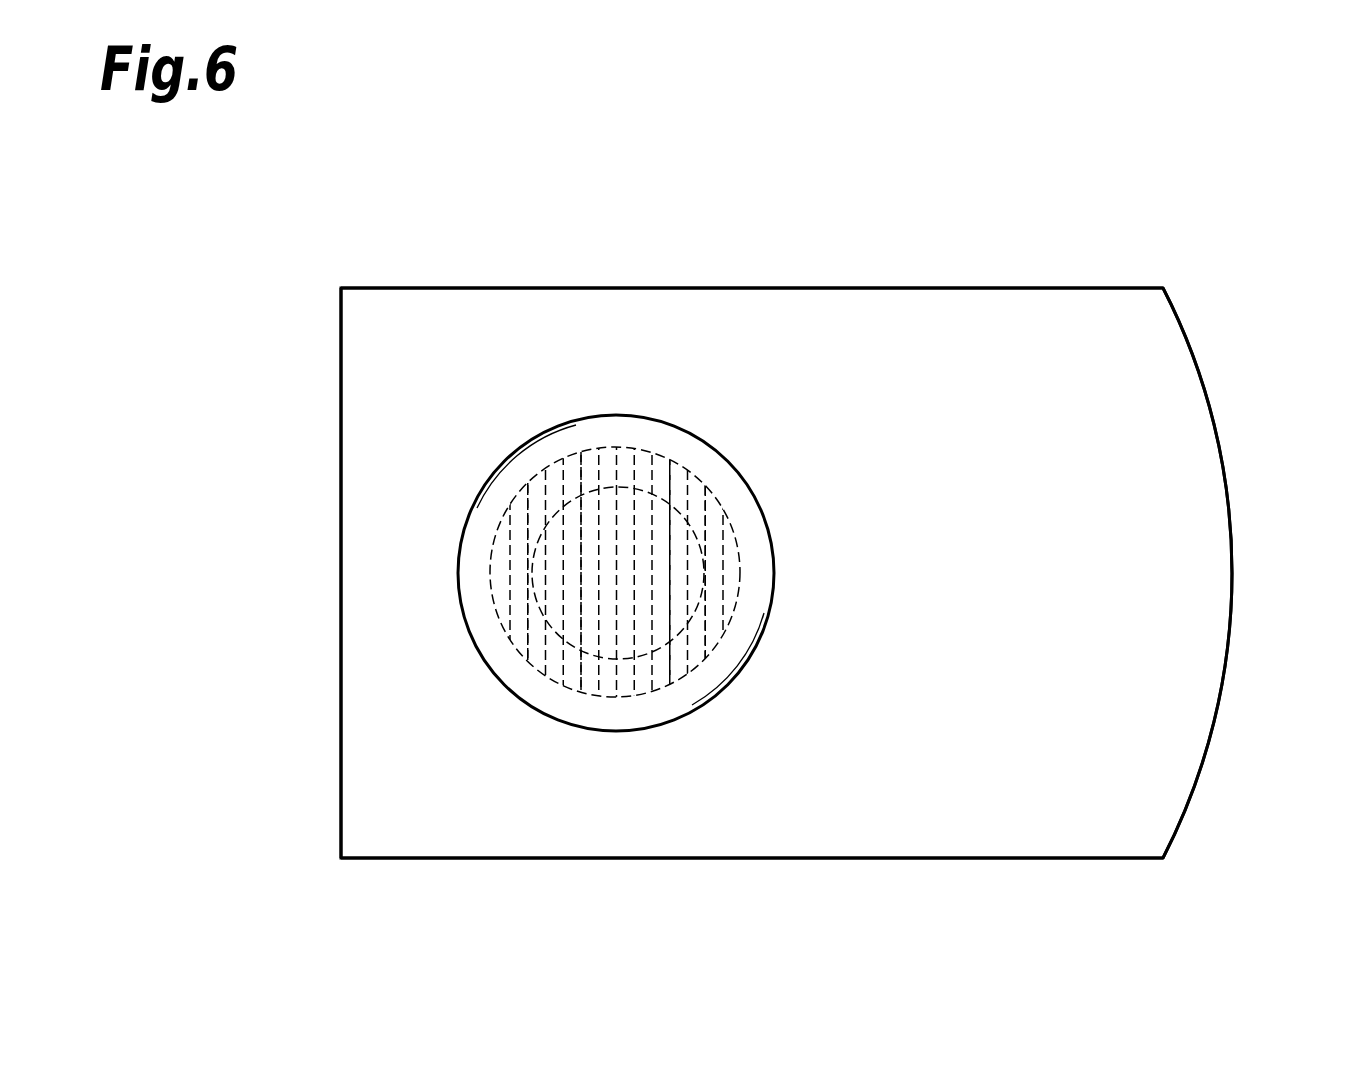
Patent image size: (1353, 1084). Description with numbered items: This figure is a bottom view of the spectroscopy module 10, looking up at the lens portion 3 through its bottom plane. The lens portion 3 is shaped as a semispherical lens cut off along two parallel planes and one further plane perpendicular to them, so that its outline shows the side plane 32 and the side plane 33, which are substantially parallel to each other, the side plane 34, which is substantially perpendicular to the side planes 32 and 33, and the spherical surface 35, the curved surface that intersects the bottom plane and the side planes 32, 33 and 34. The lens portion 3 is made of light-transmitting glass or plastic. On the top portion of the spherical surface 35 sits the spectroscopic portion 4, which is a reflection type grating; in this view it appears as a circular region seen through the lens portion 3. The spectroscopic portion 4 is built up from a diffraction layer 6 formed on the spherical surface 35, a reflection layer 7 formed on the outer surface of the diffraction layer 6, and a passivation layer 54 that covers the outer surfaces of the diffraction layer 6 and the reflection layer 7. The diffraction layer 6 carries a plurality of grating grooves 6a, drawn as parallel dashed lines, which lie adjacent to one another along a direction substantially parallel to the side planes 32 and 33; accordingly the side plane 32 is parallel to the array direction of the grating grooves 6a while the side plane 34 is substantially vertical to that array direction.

The ultrasonic sensor 10 is at (1214, 208).
The lens portion 3 is at (1228, 652).
The spectroscopic portion 4 is at (490, 682).
The diffraction layer 6 is at (707, 483).
The grating grooves 6a is at (578, 485).
The reflection layer 7 is at (693, 606).
The passivation layer 54 is at (758, 553).
The side plane (first plane) 32 is at (720, 858).
The side plane 33 is at (715, 288).
The side plane (second plane) 34 is at (338, 637).
The spherical surface (curved surface) 35 is at (1173, 369).